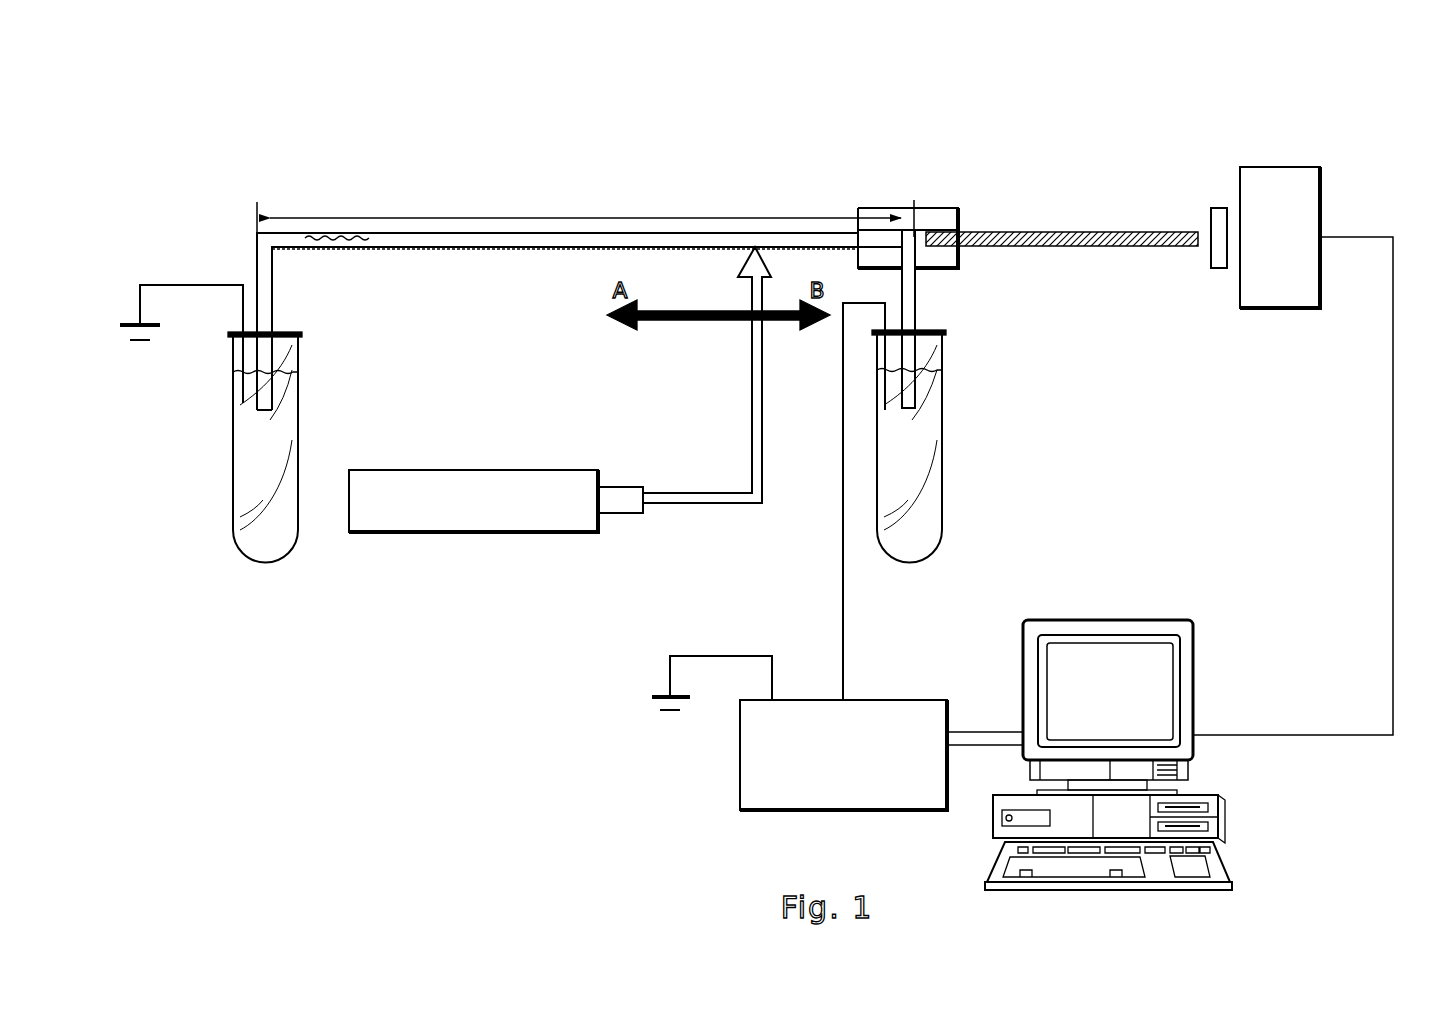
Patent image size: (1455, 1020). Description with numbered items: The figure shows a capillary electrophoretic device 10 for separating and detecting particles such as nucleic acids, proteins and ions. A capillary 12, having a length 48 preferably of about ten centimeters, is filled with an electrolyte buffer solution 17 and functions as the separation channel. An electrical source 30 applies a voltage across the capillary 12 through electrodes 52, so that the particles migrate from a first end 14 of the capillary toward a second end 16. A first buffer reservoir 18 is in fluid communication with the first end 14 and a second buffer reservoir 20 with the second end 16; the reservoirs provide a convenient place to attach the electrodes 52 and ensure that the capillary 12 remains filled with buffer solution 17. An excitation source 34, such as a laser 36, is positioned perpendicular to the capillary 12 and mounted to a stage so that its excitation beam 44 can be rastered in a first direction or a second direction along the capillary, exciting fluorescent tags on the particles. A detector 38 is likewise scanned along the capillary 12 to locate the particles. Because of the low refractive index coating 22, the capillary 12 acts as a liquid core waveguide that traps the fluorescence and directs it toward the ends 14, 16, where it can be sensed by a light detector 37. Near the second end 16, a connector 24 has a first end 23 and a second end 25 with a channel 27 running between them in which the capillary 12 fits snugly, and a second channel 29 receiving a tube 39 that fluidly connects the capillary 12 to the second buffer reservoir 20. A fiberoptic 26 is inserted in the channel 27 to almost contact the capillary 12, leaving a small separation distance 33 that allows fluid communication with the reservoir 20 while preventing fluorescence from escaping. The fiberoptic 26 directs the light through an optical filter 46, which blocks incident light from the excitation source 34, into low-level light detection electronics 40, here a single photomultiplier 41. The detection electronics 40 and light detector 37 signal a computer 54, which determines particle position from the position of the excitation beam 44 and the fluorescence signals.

The capillary electrophoretic device 10 is at (1050, 150).
The capillary 12 is at (386, 245).
The first end of the capillary 14 is at (257, 216).
The second end of the capillary 16 is at (876, 247).
The electrolyte buffer solution 17 is at (360, 245).
The first buffer reservoir 18 is at (300, 403).
The second buffer reservoir 20 is at (945, 415).
The coating 22 is at (453, 249).
The first end of the connector 23 is at (858, 208).
The connector 24 is at (932, 215).
The second end of the connector 25 is at (947, 232).
The fiberoptic 26 is at (1105, 232).
The channel 27 is at (962, 215).
The second channel 29 is at (905, 258).
The electrical source 30 is at (752, 773).
The separation distance 33 is at (920, 237).
The excitation source 34 is at (572, 535).
The laser 36 is at (458, 513).
The light detector 37 is at (1312, 205).
The detector 38 is at (1368, 165).
The tube 39 is at (915, 303).
The low-level light detection electronics 40 is at (1272, 162).
The photomultiplier 41 is at (1312, 225).
The excitation beam 44 is at (745, 258).
The optical filter 46 is at (1217, 268).
The length of the capillary 48 is at (545, 233).
The electrodes 52 is at (165, 285).
The computer 54 is at (1222, 613).